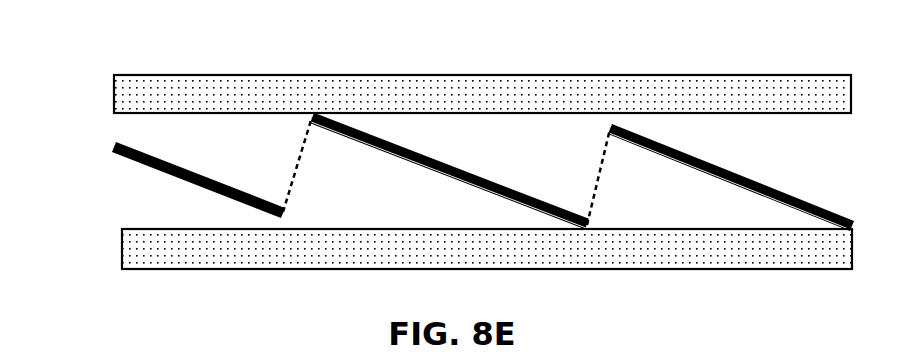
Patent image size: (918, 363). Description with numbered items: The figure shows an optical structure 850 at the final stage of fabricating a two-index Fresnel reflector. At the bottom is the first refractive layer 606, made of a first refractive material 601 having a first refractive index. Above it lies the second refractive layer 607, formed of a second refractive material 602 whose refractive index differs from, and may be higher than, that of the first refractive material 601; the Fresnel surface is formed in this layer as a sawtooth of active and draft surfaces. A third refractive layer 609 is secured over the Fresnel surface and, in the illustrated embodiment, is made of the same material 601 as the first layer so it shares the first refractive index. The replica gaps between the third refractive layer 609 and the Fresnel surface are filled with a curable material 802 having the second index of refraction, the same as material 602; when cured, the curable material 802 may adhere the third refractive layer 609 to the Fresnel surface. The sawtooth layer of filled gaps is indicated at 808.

The optical structure 850 is at (851, 37).
The third refractive layer 609 is at (108, 75).
The sawtooth reflective layer 808 is at (108, 118).
The curable material 802 is at (213, 145).
The second refractive layer 607 is at (108, 196).
The second refractive material 602 is at (138, 208).
The first refractive layer 606 is at (116, 269).
The first refractive material 601 is at (198, 104).